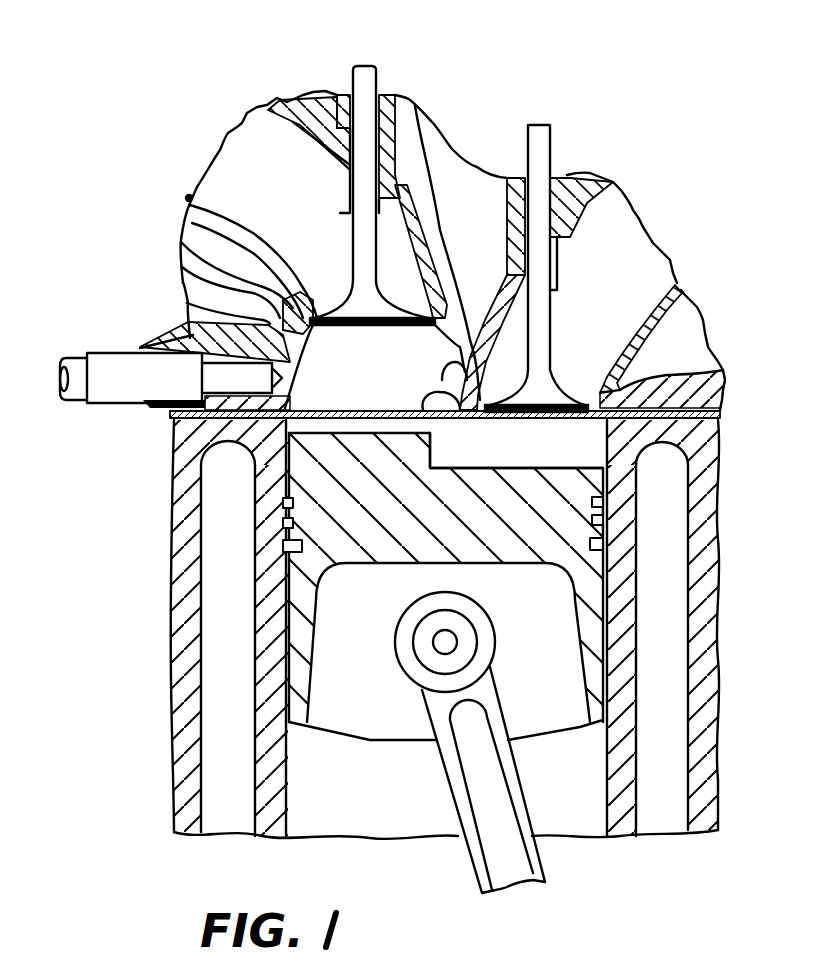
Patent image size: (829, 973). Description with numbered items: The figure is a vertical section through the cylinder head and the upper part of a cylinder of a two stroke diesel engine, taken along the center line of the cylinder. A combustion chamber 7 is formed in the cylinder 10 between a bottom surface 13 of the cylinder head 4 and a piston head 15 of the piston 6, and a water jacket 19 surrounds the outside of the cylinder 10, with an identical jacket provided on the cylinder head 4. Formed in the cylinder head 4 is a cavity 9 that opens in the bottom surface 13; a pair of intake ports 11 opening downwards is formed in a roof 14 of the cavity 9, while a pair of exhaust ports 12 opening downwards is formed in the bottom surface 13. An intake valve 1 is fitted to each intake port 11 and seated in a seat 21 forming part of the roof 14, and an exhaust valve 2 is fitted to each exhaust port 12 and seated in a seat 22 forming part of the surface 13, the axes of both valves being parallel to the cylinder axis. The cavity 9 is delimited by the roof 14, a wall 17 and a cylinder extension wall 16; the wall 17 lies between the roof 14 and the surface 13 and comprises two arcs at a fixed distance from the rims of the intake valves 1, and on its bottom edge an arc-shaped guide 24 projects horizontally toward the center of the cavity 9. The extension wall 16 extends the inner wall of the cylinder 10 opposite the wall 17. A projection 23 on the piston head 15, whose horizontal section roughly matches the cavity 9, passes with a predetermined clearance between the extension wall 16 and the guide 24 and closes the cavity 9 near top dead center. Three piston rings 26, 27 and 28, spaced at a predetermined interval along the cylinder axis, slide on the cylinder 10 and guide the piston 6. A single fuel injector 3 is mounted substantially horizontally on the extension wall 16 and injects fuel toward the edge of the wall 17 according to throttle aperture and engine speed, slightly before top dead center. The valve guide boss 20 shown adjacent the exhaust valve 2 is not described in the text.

The intake valve 1 is at (365, 68).
The exhaust valve 2 is at (542, 122).
The fuel injector 3 is at (120, 370).
The cylinder head 4 is at (189, 197).
The piston 6 is at (553, 519).
The combustion chamber 7 is at (590, 426).
The cavity 9 is at (413, 367).
The cylinder 10 is at (175, 432).
The intake port 11 is at (246, 138).
The exhaust port 12 is at (610, 247).
The bottom surface 13 is at (475, 420).
The roof 14 is at (182, 268).
The piston head 15 is at (512, 460).
The cylinder extension wall 16 is at (187, 308).
The wall 17 is at (480, 355).
The water jacket 19 is at (215, 641).
The valve guide boss 20 is at (465, 172).
The seat 21 is at (190, 226).
The seat 22 is at (728, 368).
The projection 23 is at (283, 430).
The arc-shaped guide 24 is at (485, 393).
The piston ring 26 is at (283, 504).
The piston ring 27 is at (283, 533).
The piston ring 28 is at (283, 552).